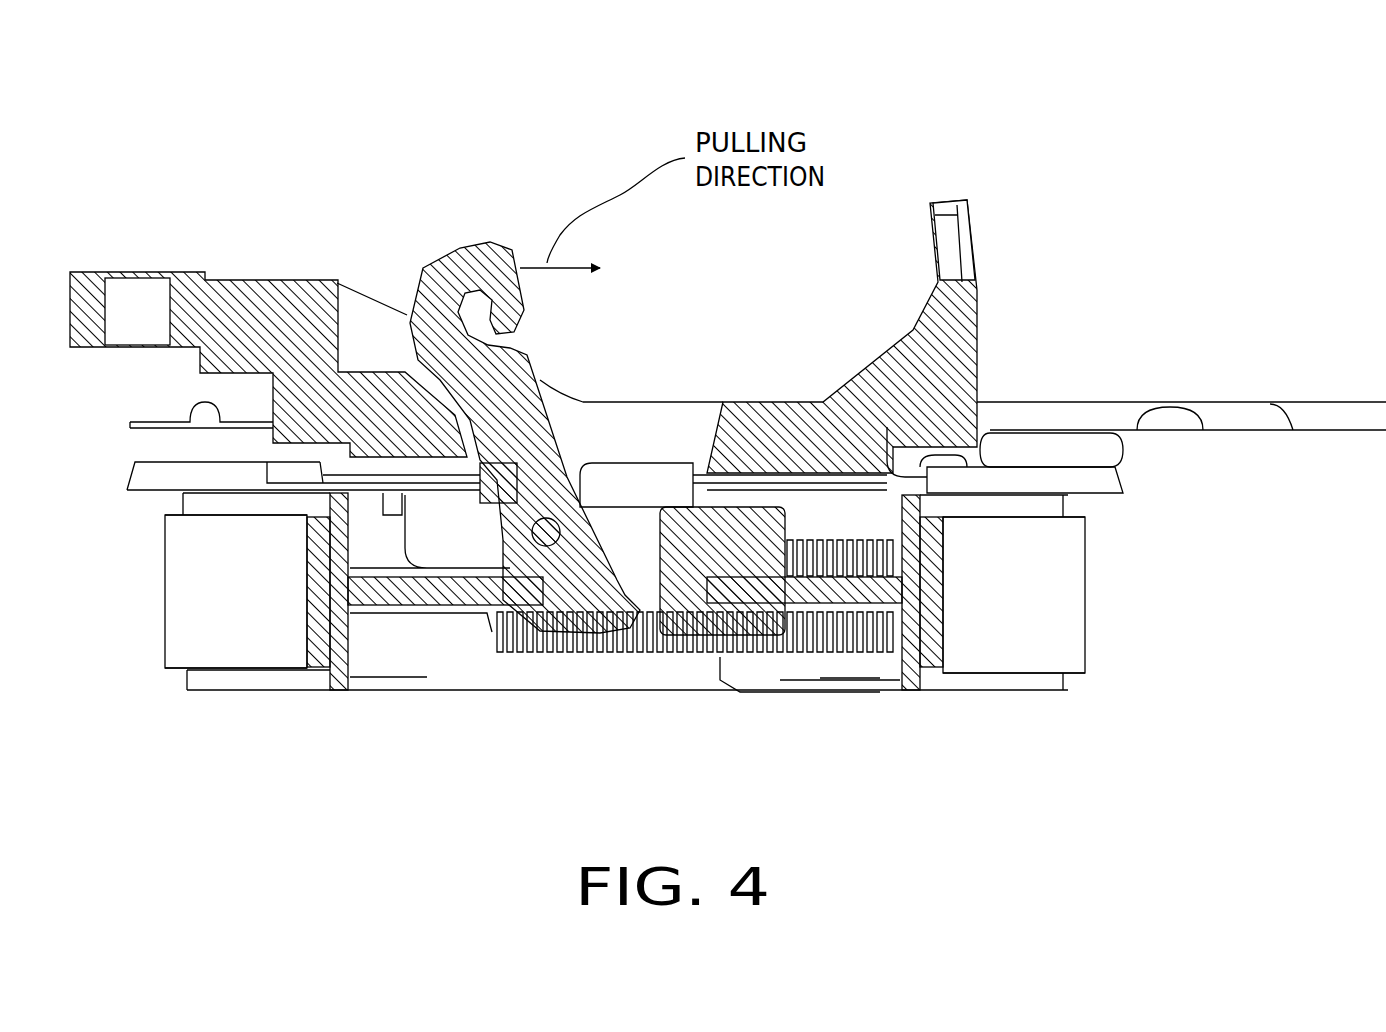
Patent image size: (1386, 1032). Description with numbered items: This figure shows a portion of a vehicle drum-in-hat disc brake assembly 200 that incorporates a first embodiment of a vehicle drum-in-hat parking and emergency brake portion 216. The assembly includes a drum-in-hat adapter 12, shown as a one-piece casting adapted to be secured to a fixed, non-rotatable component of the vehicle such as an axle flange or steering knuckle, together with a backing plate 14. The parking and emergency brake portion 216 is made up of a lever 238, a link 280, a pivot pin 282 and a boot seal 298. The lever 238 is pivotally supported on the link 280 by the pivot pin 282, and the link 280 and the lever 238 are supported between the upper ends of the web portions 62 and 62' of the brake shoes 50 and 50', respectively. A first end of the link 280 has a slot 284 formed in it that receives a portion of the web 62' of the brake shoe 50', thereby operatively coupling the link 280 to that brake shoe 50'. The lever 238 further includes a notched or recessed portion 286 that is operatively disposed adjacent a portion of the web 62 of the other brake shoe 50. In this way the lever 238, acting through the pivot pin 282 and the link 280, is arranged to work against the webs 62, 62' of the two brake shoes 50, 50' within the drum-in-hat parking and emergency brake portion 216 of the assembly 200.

The vehicle drum-in-hat disc brake assembly 200 is at (520, 112).
The lever 238 is at (510, 250).
The vehicle drum-in-hat parking and emergency brake portion 216 is at (592, 313).
The drum-in-hat adapter 12 is at (268, 366).
The backing plate 14 is at (1128, 482).
The boot seal 298 is at (648, 478).
The slot 284 is at (728, 585).
The pivot pin 282 is at (557, 546).
The notched or recessed portion 286 is at (543, 588).
The link 280 is at (690, 635).
The web portion 62 is at (445, 635).
The web portion 62' is at (840, 712).
The brake shoe 50 is at (256, 631).
The brake shoe 50' is at (993, 632).